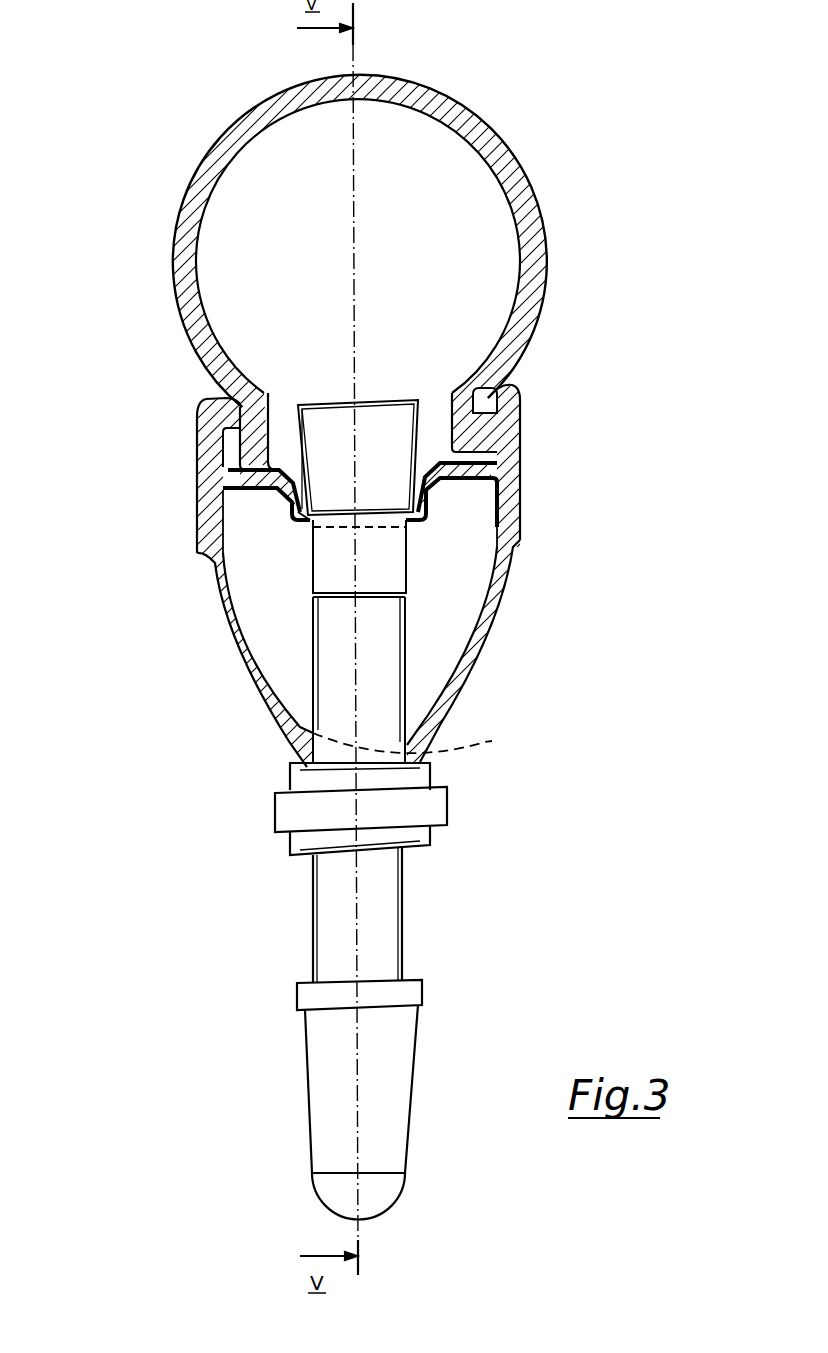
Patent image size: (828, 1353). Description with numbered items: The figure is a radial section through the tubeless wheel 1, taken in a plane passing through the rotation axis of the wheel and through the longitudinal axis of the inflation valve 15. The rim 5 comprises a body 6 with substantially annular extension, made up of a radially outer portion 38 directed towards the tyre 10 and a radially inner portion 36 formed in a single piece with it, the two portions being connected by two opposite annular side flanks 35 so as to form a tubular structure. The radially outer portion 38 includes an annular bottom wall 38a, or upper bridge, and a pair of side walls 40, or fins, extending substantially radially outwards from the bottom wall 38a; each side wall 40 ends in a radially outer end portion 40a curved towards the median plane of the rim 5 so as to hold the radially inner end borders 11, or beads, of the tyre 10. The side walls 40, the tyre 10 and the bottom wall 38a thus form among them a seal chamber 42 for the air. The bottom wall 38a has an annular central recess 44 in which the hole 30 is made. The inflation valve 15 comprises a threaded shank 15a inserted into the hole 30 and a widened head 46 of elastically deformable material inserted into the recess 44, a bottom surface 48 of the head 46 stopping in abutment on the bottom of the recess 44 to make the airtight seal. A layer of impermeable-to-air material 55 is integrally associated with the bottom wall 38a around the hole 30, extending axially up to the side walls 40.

The tubeless wheel 1 is at (122, 178).
The tyre 10 is at (503, 132).
The seal chamber 42 is at (405, 234).
The side walls 40 is at (205, 426).
The radially outer end portion 40a is at (216, 398).
The borders 11 is at (228, 447).
The radially outer portion 38 is at (540, 425).
The bottom wall 38a is at (462, 488).
The head 46 is at (390, 451).
The layer of impermeable-to-air material 55 is at (409, 512).
The annular central recess 44 is at (300, 536).
The bottom surface 48 is at (328, 518).
The through hole 30 is at (410, 520).
The annular side flanks 35 is at (218, 595).
The rim 5 is at (216, 656).
The body 6 is at (248, 708).
The radially inner portion 36 is at (417, 740).
The inflation valve 15 is at (287, 917).
The threaded shank 15a is at (387, 922).